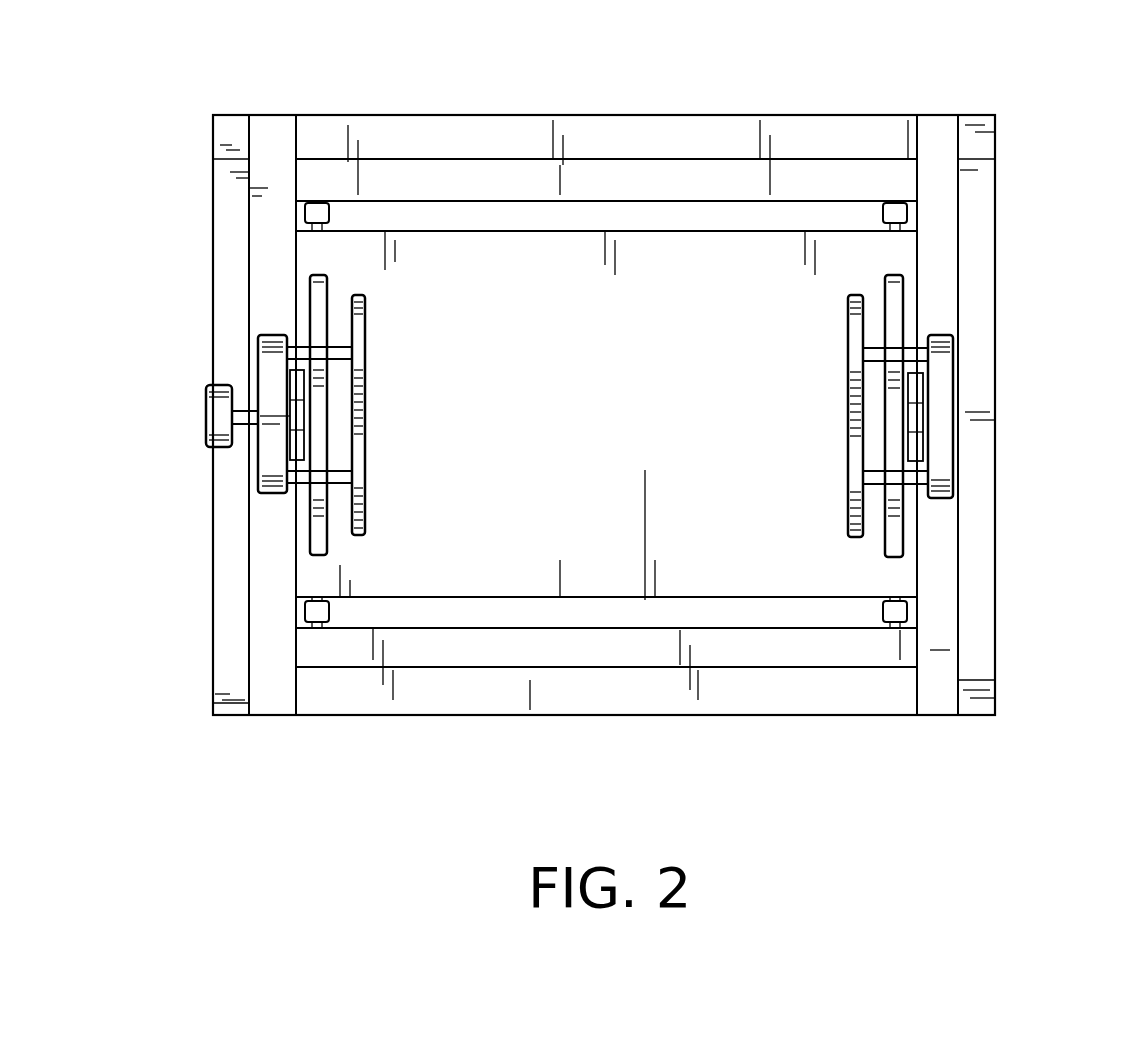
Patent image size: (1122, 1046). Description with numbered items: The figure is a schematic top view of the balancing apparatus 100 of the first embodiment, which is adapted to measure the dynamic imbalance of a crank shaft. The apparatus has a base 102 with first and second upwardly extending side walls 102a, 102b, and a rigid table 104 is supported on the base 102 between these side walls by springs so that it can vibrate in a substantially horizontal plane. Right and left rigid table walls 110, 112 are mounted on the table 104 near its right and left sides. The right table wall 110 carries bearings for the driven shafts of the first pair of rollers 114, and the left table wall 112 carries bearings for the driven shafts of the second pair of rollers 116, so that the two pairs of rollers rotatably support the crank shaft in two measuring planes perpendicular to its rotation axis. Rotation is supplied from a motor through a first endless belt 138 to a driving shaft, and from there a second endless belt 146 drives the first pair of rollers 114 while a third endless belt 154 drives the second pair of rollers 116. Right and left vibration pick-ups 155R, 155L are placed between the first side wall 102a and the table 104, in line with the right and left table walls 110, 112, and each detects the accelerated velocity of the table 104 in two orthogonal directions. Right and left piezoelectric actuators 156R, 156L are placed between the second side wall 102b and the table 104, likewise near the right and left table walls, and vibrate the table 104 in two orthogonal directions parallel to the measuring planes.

The balancing apparatus 100 is at (1013, 371).
The base 102 is at (637, 728).
The first side wall 102a is at (745, 690).
The second side wall 102b is at (452, 134).
The table 104 is at (635, 272).
The right table wall 110 is at (900, 308).
The left table wall 112 is at (305, 525).
The first pair of rollers 114 is at (848, 440).
The second pair of rollers 116 is at (362, 397).
The first endless belt 138 is at (207, 427).
The second endless belt 146 is at (940, 427).
The third endless belt 154 is at (267, 375).
The left vibration pick-up 155L is at (305, 612).
The right vibration pick-up 155R is at (905, 612).
The left piezoelectric actuator 156L is at (305, 212).
The right piezoelectric actuator 156R is at (908, 212).